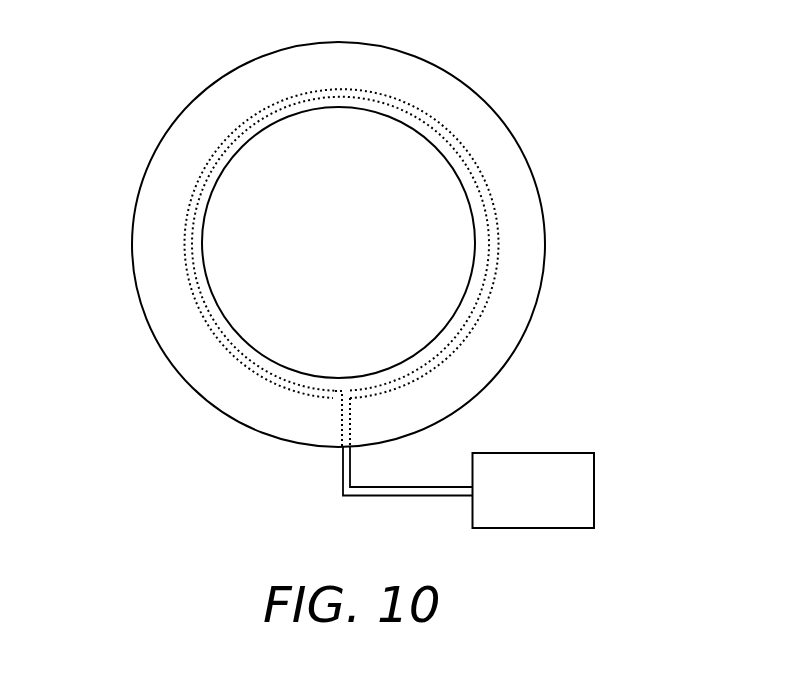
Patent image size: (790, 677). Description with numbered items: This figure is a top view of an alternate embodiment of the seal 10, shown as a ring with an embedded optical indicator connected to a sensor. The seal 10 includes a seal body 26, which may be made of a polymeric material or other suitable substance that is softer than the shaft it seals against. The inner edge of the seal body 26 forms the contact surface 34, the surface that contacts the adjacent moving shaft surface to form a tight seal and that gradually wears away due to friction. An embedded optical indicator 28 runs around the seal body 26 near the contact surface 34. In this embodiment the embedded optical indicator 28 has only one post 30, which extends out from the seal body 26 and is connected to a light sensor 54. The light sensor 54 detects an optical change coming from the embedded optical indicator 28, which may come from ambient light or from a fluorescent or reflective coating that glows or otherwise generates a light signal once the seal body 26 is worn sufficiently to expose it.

The seal 10 is at (384, 244).
The seal body 26 is at (525, 213).
The embedded optical indicator 28 is at (478, 348).
The post 30 is at (352, 420).
The contact surface 34 is at (471, 270).
The light sensor 54 is at (500, 528).